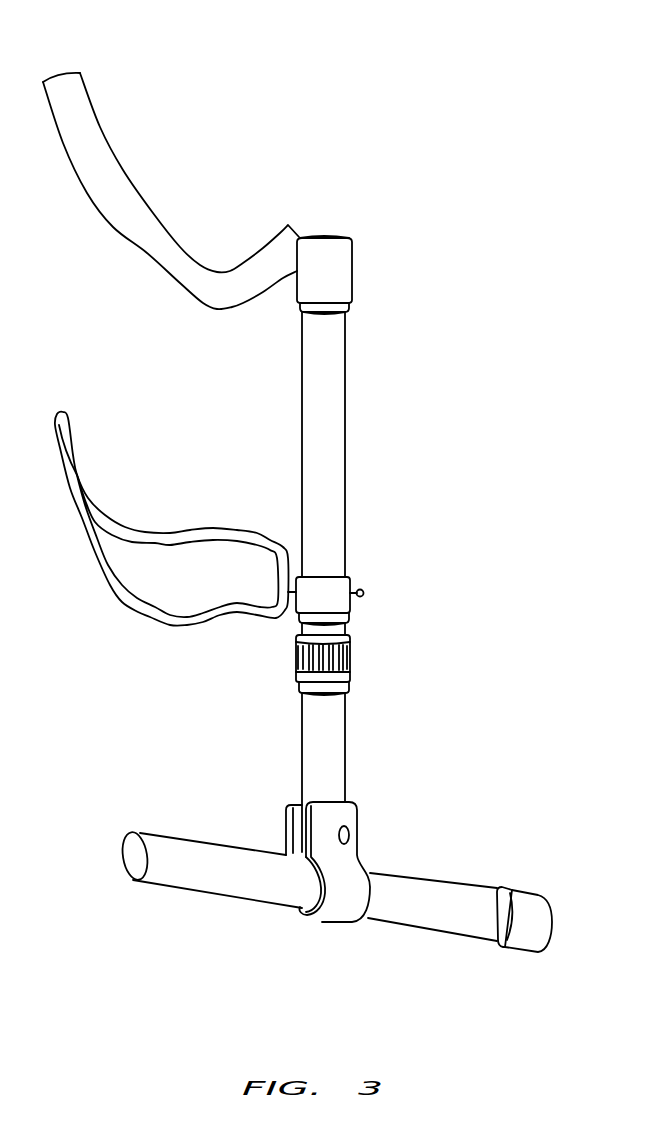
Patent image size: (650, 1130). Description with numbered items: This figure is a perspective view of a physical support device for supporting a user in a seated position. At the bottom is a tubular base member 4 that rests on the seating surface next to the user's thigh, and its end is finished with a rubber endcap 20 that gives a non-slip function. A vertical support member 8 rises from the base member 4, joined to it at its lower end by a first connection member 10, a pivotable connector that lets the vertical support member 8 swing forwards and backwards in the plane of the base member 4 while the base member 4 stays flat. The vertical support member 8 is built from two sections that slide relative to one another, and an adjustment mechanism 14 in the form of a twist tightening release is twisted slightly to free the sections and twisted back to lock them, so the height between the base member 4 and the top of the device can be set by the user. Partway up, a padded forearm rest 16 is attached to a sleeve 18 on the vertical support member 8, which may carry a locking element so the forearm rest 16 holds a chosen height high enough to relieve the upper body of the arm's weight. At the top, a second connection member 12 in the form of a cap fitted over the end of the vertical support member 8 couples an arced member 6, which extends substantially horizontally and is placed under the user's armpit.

The base member 4 is at (172, 888).
The arced member 6 is at (60, 72).
The vertical support member 8 is at (345, 443).
The first connection member 10 is at (333, 925).
The second connection member 12 is at (337, 255).
The adjustment mechanism 14 is at (350, 665).
The forearm rest 16 is at (118, 598).
The sleeve 18 is at (350, 580).
The rubber endcap 20 is at (514, 955).